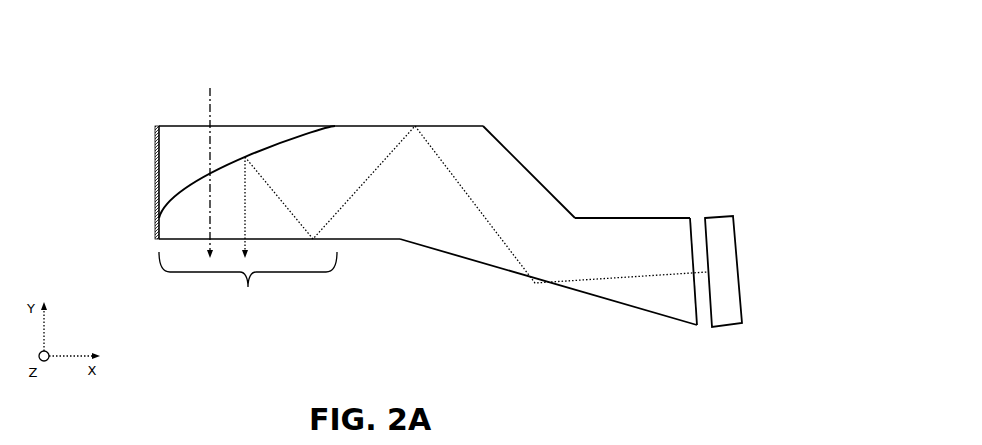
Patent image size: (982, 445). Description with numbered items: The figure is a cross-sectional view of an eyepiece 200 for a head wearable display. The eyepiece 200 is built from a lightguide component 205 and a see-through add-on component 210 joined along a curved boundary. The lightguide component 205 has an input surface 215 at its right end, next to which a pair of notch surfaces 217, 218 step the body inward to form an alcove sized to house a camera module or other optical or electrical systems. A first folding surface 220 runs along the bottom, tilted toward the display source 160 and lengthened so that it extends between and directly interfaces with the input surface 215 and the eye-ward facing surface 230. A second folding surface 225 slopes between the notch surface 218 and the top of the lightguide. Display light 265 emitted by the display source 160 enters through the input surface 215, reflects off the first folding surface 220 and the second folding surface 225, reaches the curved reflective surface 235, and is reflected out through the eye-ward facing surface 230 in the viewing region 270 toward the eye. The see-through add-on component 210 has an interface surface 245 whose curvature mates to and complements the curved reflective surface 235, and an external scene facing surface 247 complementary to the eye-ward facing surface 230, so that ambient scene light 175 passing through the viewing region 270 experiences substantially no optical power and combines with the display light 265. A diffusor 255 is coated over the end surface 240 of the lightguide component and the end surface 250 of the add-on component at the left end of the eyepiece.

The eyepiece 200 is at (117, 57).
The lightguide component 205 is at (429, 195).
The see-through add-on component 210 is at (287, 182).
The input surface 215 is at (693, 228).
The notch surface 217 is at (631, 218).
The notch surface 218 is at (519, 161).
The first folding surface 220 is at (548, 283).
The second folding surface 225 is at (512, 137).
The eye-ward facing surface 230 is at (372, 239).
The curved reflective surface 235 is at (285, 119).
The end surface 240 is at (155, 227).
The interface surface 245 is at (353, 78).
The external scene facing surface 247 is at (193, 125).
The end surface 250 is at (155, 153).
The diffusor 255 is at (155, 182).
The display light 265 is at (373, 172).
The viewing region 270 is at (248, 246).
The ambient scene light 175 is at (208, 261).
The display source 160 is at (727, 327).